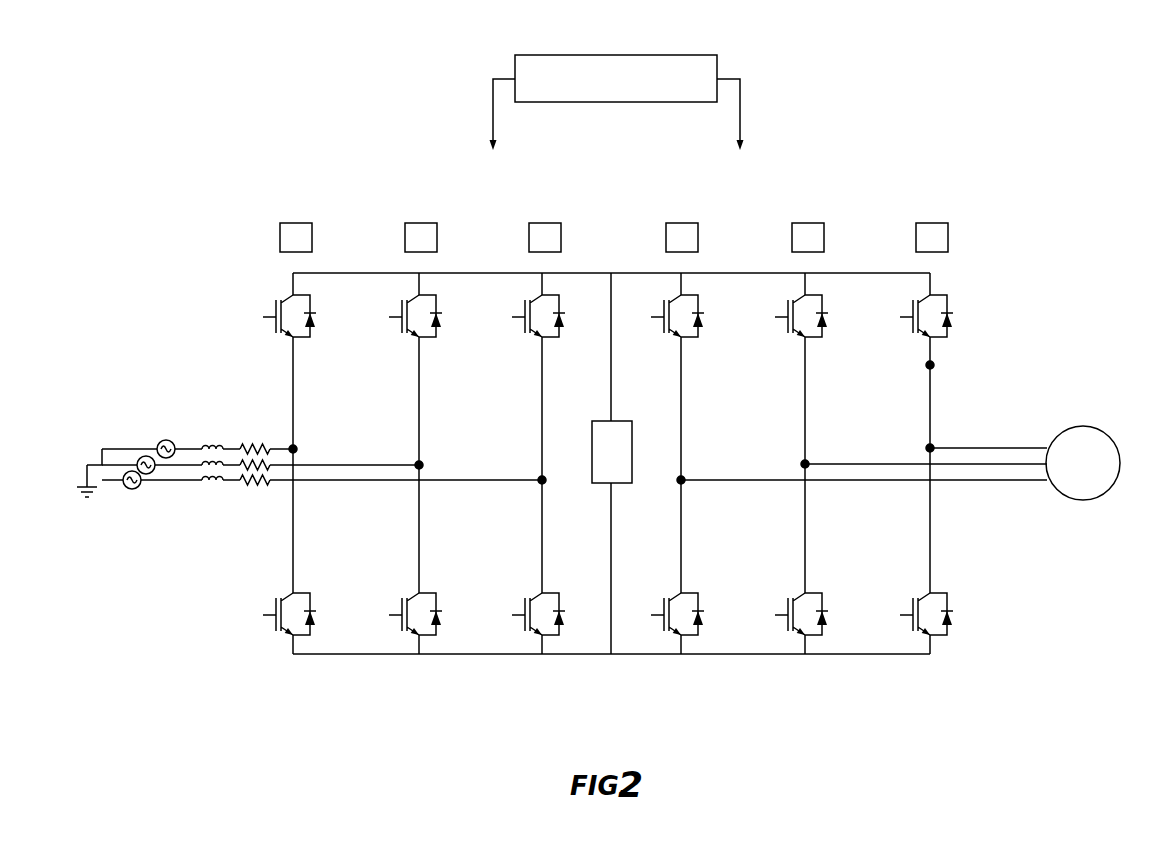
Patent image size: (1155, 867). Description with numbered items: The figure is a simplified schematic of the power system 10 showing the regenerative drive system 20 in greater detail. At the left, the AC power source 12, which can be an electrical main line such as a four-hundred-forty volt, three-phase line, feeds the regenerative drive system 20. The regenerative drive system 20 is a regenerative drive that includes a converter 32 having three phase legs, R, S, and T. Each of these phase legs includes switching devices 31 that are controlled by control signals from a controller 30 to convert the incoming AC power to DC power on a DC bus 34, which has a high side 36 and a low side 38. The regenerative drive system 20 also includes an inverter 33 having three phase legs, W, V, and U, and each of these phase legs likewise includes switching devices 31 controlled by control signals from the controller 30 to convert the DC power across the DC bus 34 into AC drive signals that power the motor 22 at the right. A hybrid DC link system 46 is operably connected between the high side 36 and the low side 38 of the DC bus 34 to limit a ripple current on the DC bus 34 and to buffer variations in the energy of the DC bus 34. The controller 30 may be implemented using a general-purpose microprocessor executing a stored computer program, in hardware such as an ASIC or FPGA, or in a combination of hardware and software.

The power system 10 is at (990, 200).
The AC power source 12 is at (150, 440).
The regenerative drive system 20 is at (755, 200).
The motor 22 is at (1085, 427).
The controller 30 is at (717, 60).
The switching devices 31 is at (257, 590).
The converter 32 is at (420, 688).
The inverter 33 is at (827, 690).
The DC bus 34 is at (360, 273).
The high side 36 is at (611, 273).
The low side 38 is at (578, 655).
The hybrid DC link system 46 is at (600, 464).